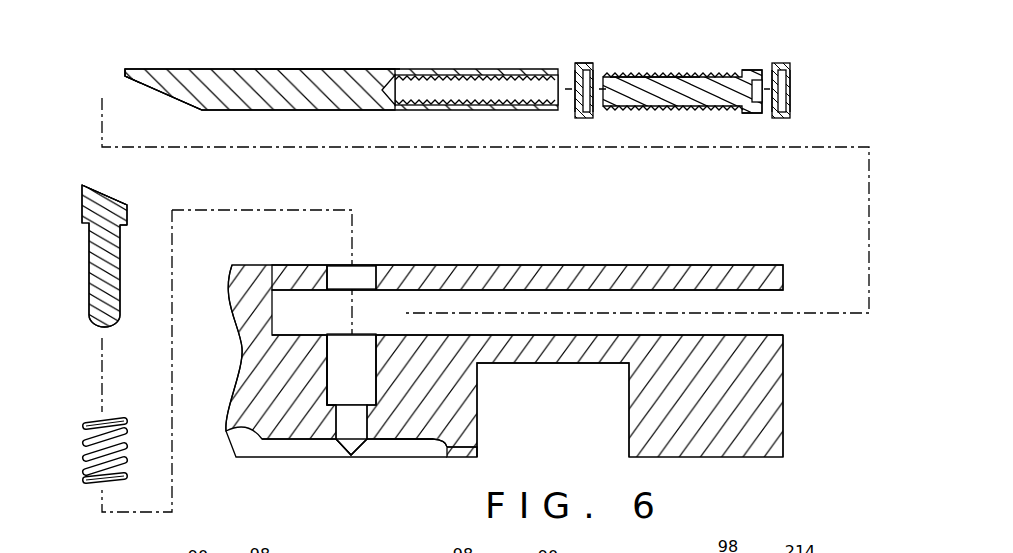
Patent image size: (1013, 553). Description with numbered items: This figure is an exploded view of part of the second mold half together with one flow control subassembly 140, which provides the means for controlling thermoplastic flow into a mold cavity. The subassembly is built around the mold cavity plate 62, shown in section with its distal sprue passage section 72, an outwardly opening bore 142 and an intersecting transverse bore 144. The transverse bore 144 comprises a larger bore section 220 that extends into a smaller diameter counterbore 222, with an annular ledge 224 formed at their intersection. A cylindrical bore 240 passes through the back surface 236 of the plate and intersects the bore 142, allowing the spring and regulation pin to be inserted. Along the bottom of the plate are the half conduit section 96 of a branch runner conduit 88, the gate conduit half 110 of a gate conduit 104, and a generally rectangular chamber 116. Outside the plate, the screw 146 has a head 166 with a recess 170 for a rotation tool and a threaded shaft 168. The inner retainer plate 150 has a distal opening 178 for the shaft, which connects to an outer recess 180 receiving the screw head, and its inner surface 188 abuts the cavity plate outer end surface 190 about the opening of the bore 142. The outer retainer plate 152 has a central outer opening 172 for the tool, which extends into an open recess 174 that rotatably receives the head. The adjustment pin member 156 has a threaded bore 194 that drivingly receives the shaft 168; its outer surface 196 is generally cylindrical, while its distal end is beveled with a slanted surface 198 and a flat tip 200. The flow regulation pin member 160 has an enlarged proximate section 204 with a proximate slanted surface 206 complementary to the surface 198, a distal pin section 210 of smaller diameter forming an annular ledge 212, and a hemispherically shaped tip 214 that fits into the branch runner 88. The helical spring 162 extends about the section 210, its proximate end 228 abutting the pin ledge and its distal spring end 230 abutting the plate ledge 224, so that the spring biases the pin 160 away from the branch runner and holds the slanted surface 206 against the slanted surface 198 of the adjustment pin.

The flow control subassembly 140 is at (245, 42).
The adjustment pin member 156 is at (364, 49).
The adjustment pin outer surface 196 is at (266, 68).
The threaded bore 194 is at (450, 80).
The flat tip 200 is at (124, 71).
The slanted surface 198 is at (163, 94).
The inner screw retainer plate 150 is at (583, 44).
The inner surface of retainer plate 188 is at (582, 68).
The distal opening 178 is at (580, 97).
The outer recess 180 is at (592, 100).
The screw 146 is at (702, 54).
The threaded shaft 168 is at (628, 72).
The screw head 166 is at (752, 66).
The recess 170 is at (758, 90).
The outer screw retainer plate 152 is at (802, 50).
The central outer opening 172 is at (790, 93).
The open recess 174 is at (779, 104).
The flow regulation pin member 160 is at (133, 254).
The enlarged proximate section 204 is at (82, 204).
The proximate slanted surface 206 is at (108, 195).
The distal pin section 210 is at (89, 268).
The annular ledge 212 is at (121, 226).
The hemispherically shaped tip 214 is at (95, 327).
The helical spring 162 is at (88, 496).
The spring proximate end 228 is at (111, 418).
The distal spring end 230 is at (110, 487).
The mold cavity plate 62 is at (793, 425).
The distal sprue passage section 72 is at (263, 440).
The back surface of cavity plate 236 is at (628, 265).
The cylindrical bore 240 is at (330, 290).
The larger bore section 220 is at (372, 350).
The transverse bore 144 is at (334, 360).
The annular ledge 224 is at (337, 400).
The outwardly opening bore 142 is at (760, 326).
The cavity plate outer end surface 190 is at (784, 393).
The half conduit section 96 is at (306, 452).
The counterbore 222 is at (363, 432).
The branch runner conduit 88 is at (413, 455).
The gate conduit half 110 is at (455, 448).
The gate conduit 104 is at (468, 462).
The chamber 116 is at (629, 412).